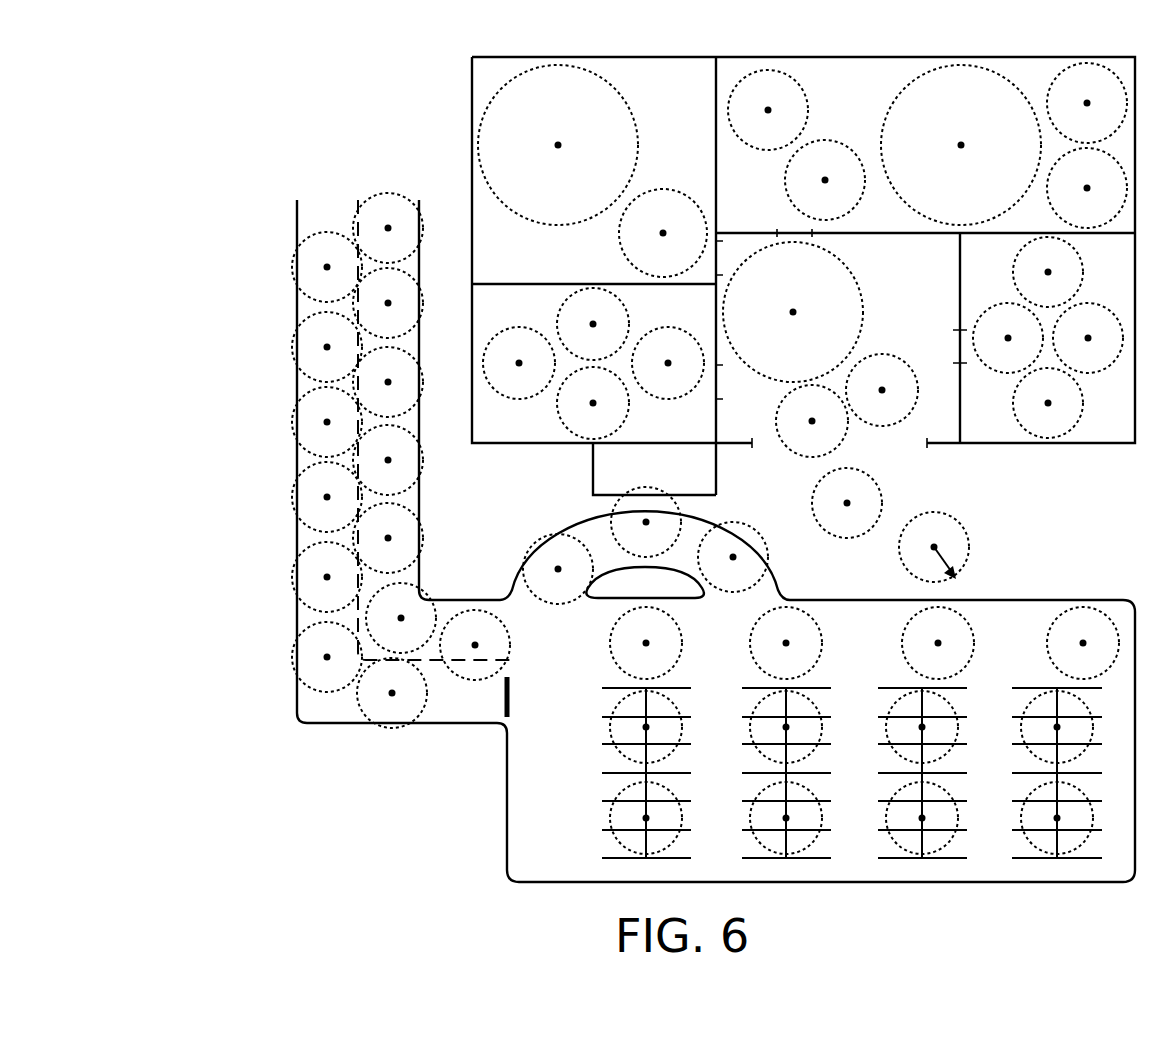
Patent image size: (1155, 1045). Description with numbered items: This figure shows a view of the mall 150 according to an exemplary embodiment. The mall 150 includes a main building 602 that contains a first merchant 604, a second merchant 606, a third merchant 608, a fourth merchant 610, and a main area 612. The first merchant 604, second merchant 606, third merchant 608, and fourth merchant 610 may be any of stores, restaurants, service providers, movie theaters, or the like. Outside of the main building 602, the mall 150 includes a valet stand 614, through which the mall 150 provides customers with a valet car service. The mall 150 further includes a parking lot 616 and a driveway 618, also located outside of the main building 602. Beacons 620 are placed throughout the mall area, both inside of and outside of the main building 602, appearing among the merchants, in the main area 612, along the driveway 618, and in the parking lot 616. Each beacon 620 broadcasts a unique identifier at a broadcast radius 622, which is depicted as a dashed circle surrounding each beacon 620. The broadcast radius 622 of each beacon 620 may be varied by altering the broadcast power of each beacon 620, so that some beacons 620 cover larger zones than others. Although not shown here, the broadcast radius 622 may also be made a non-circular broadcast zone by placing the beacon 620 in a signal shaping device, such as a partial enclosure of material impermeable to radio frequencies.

The mall 150 is at (218, 163).
The main building 602 is at (1067, 57).
The first merchant 604 is at (692, 317).
The second merchant 606 is at (692, 111).
The third merchant 608 is at (867, 94).
The fourth merchant 610 is at (1130, 267).
The main area 612 is at (944, 267).
The valet stand 614 is at (701, 481).
The parking lot 616 is at (541, 811).
The driveway 618 is at (257, 338).
The beacon 620 is at (934, 547).
The broadcast radius 622 is at (956, 573).